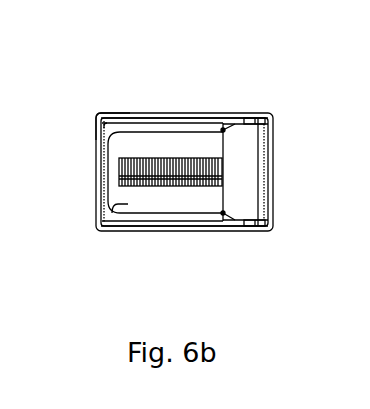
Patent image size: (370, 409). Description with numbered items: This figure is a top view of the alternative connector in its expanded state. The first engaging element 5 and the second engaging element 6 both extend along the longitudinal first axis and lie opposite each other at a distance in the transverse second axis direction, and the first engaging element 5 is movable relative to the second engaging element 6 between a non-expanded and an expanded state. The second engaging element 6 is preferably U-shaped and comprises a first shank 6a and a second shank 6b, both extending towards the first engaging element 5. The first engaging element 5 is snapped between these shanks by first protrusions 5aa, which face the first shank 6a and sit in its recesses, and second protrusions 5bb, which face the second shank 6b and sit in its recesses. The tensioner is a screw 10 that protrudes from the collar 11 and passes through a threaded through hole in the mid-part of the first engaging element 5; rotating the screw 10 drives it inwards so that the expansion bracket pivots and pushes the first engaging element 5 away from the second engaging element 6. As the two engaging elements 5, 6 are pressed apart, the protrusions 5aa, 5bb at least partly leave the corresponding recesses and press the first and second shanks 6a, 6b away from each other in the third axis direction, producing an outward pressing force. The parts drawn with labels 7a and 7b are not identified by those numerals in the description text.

The first engaging element 5 is at (250, 176).
The first protrusions 5aa is at (250, 114).
The second protrusions 5bb is at (245, 230).
The second engaging element 6 is at (106, 181).
The first shank 6a is at (212, 120).
The second shank 6b is at (177, 229).
The upper inner frame 7a is at (151, 134).
The lower inner frame 7b is at (134, 216).
The screw 10 is at (128, 172).
The collar 11 is at (97, 113).